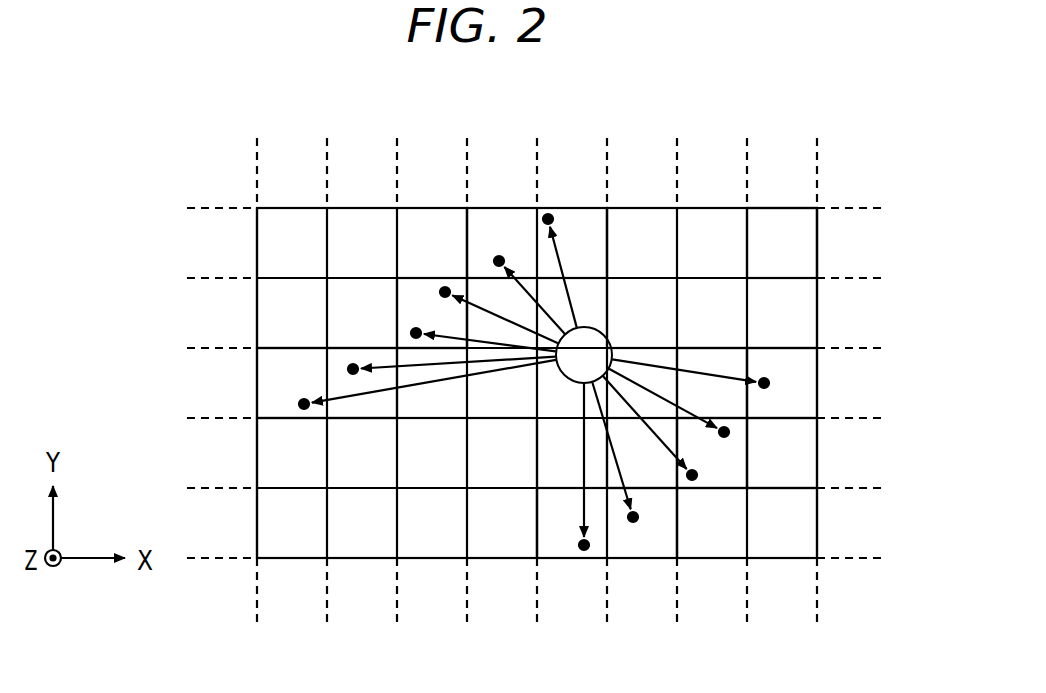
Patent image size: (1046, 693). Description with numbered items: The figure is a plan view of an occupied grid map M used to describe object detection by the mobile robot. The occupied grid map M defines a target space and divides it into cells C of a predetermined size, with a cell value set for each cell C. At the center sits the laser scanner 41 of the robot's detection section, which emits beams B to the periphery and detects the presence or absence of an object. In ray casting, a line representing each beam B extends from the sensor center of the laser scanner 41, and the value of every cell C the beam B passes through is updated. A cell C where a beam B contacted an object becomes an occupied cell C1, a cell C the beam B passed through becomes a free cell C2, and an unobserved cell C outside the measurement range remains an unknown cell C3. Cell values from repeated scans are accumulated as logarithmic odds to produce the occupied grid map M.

The laser scanner 41 is at (596, 342).
The beam B is at (578, 298).
The cell C is at (772, 222).
The occupied cell C1 is at (502, 222).
The free cell C2 is at (707, 360).
The unknown cell C3 is at (349, 297).
The occupied grid map M is at (852, 172).